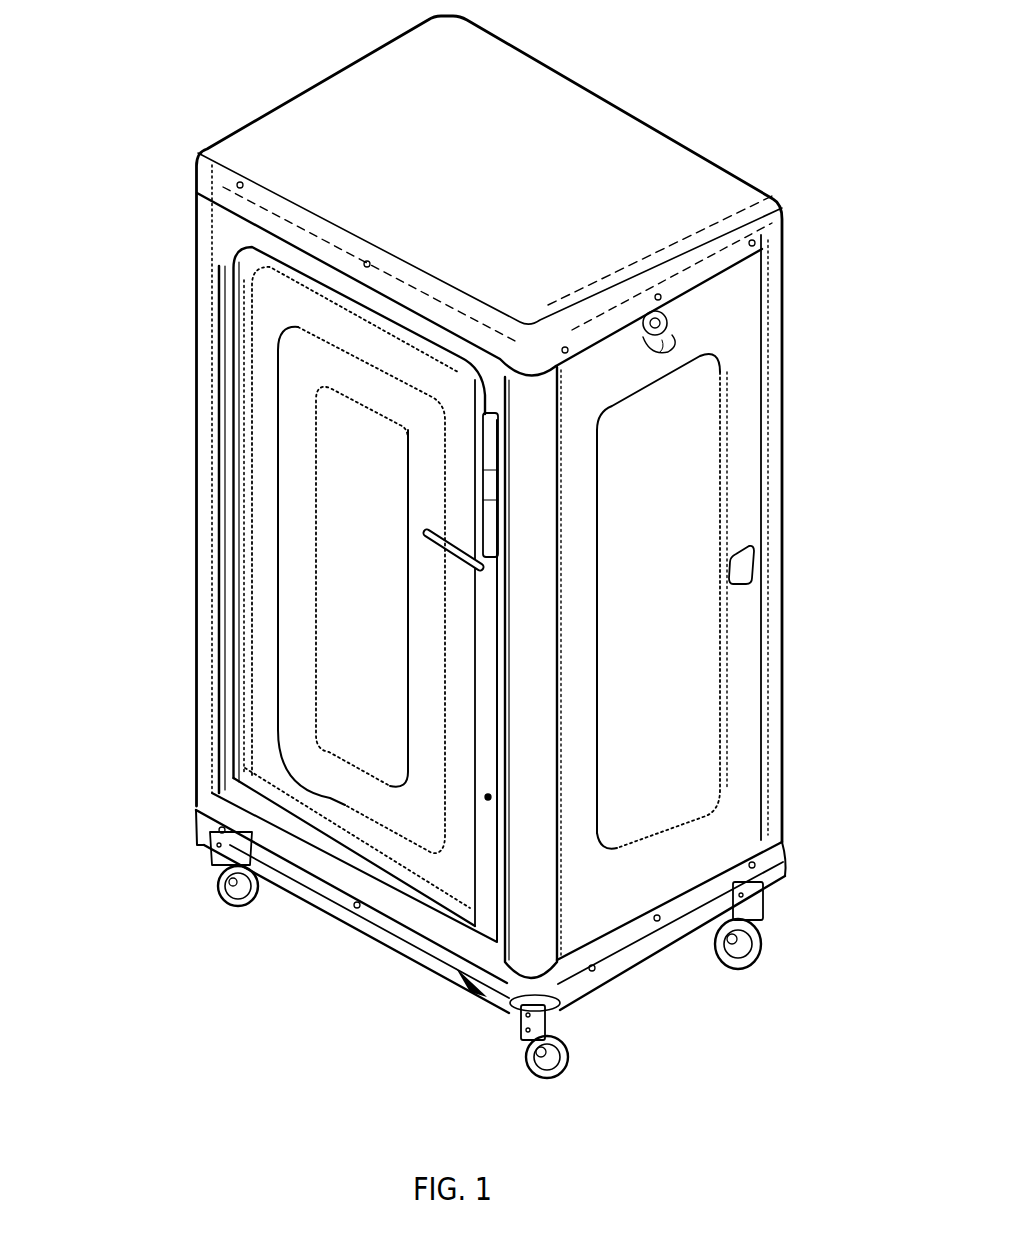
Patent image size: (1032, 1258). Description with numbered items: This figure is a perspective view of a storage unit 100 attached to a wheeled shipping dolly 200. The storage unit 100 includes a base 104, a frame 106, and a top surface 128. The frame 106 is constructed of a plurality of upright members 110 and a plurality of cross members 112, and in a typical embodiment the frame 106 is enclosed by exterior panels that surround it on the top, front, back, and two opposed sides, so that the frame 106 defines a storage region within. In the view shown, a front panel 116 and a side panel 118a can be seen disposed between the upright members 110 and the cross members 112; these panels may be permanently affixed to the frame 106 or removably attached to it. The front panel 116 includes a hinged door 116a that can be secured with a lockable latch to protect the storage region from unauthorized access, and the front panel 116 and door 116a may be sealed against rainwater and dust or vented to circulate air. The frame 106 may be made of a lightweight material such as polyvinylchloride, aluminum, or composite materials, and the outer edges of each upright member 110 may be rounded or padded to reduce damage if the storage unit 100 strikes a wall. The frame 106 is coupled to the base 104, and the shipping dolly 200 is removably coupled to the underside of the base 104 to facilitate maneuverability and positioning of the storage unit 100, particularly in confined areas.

The storage unit 100 is at (137, 73).
The base 104 is at (257, 835).
The frame 106 is at (783, 488).
The upright member 110 is at (197, 552).
The cross member 112 is at (683, 273).
The front panel 116 is at (240, 233).
The door 116a is at (387, 591).
The side panel 118a is at (680, 616).
The top surface 128 is at (482, 187).
The shipping dolly 200 is at (235, 940).